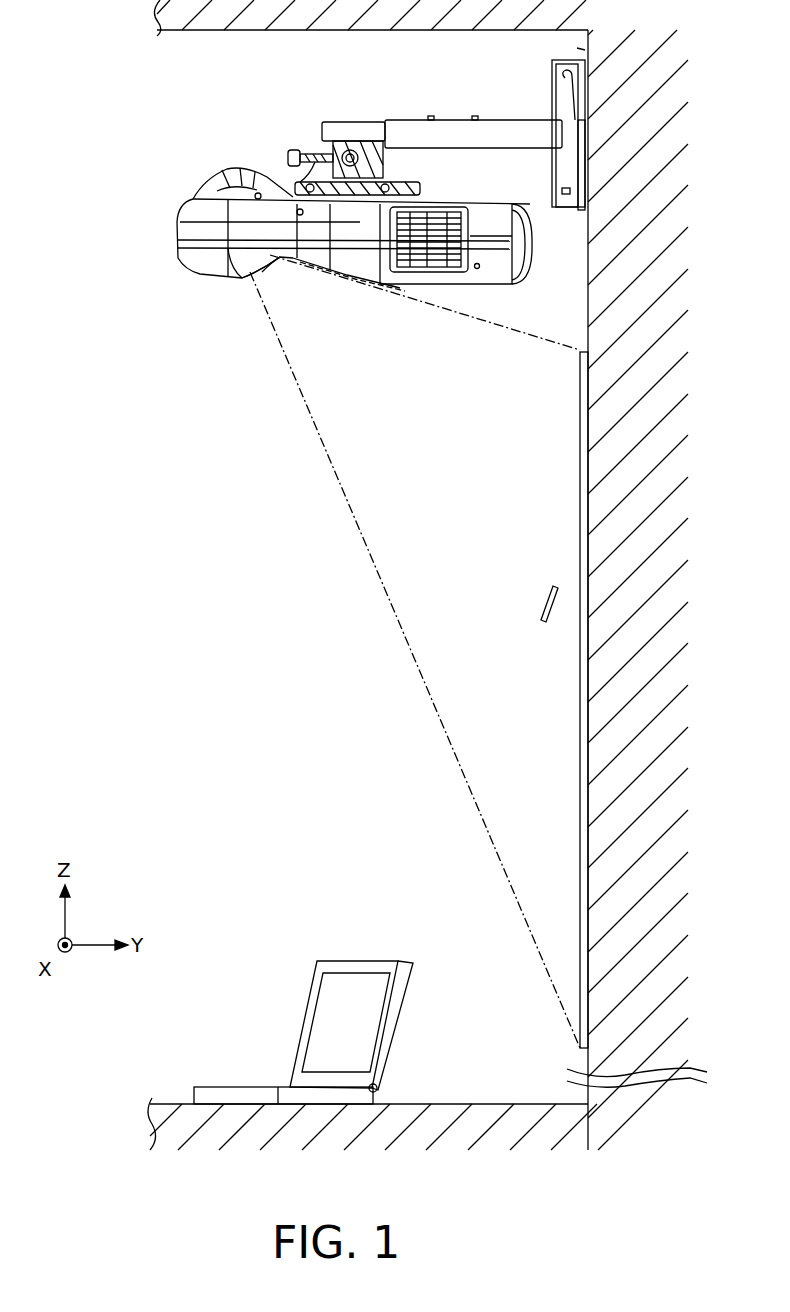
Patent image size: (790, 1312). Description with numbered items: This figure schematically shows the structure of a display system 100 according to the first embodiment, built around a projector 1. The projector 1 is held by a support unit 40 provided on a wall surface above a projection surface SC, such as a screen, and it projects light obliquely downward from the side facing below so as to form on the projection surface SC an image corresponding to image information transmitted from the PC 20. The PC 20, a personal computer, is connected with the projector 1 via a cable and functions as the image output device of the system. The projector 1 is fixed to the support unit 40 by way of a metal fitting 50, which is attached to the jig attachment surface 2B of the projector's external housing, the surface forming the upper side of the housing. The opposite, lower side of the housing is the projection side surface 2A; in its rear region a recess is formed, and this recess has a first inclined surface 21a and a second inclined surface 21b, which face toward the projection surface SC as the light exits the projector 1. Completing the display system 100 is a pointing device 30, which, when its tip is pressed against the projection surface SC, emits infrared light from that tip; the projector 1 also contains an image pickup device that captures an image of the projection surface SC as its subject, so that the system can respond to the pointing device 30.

The display system 100 is at (325, 576).
The projector 1 is at (349, 243).
The projection side surface 2A is at (215, 273).
The jig attachment surface 2B is at (458, 202).
The first inclined surface 21a is at (267, 268).
The second inclined surface 21b is at (313, 272).
The support unit 40 is at (437, 120).
The metal fitting 50 is at (385, 176).
The pointing device 30 is at (520, 597).
The projection surface SC is at (580, 806).
The PC (personal computer) 20 is at (238, 1087).